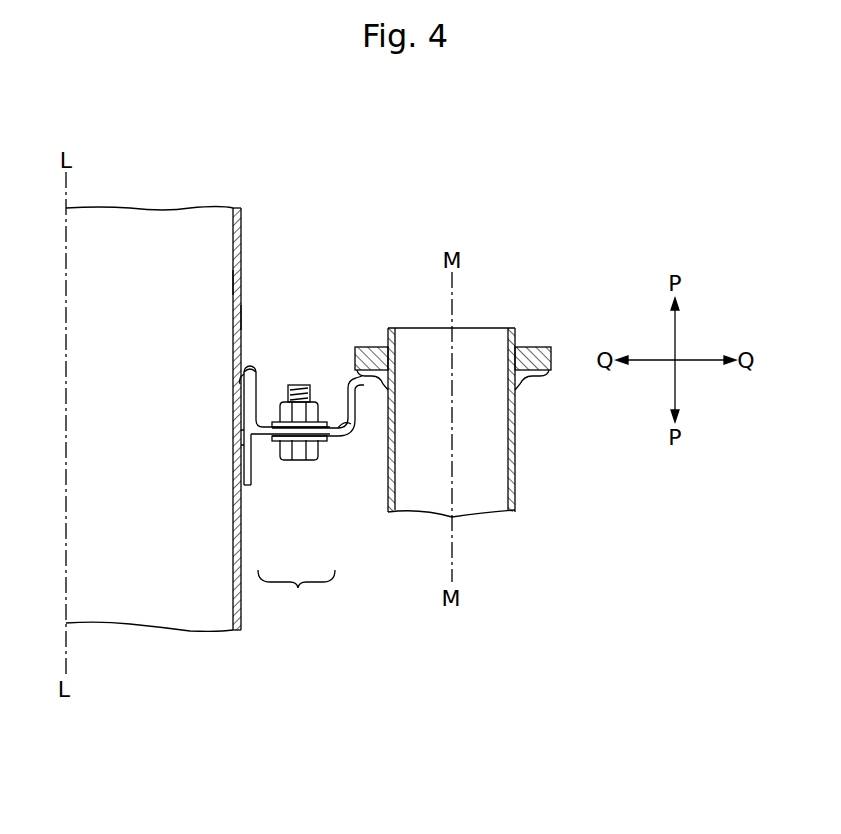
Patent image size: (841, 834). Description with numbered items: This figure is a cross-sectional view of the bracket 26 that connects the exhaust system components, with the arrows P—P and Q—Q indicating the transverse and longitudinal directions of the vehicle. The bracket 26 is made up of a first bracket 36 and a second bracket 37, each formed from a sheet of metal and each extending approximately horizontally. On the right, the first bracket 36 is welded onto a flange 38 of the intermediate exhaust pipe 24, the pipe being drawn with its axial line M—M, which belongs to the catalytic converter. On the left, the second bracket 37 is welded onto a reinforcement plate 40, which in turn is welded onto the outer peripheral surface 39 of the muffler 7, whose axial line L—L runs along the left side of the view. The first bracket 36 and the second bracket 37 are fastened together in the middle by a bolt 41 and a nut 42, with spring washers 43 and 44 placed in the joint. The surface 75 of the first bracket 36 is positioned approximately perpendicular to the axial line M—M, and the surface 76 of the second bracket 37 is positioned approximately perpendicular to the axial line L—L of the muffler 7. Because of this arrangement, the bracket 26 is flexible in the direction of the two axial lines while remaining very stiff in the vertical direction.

The muffler 7 is at (244, 236).
The outer peripheral surface 39 is at (242, 282).
The reinforcement plate 40 is at (243, 320).
The second bracket 37 is at (258, 440).
The first bracket 36 is at (347, 438).
The surface of the first bracket 75 is at (262, 425).
The surface of the second bracket 76 is at (241, 445).
The nut 42 is at (307, 400).
The bolt 41 is at (293, 459).
The spring washer 44 is at (318, 426).
The spring washer 43 is at (325, 441).
The intermediate exhaust pipe 24 is at (516, 450).
The flange 38 is at (353, 350).
The bracket 26 is at (296, 593).